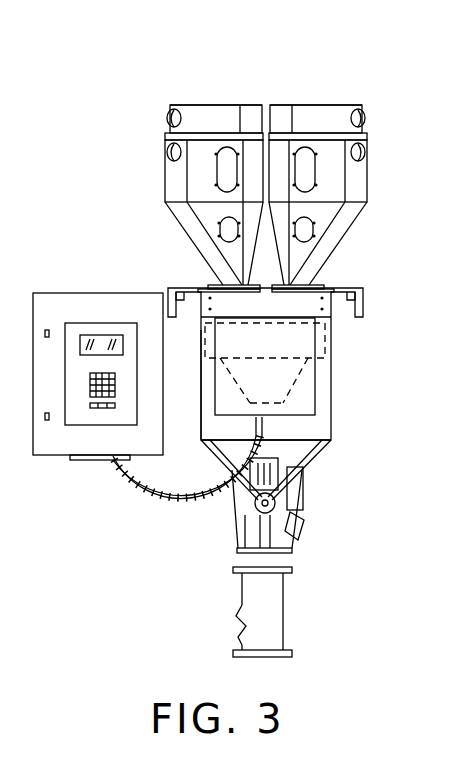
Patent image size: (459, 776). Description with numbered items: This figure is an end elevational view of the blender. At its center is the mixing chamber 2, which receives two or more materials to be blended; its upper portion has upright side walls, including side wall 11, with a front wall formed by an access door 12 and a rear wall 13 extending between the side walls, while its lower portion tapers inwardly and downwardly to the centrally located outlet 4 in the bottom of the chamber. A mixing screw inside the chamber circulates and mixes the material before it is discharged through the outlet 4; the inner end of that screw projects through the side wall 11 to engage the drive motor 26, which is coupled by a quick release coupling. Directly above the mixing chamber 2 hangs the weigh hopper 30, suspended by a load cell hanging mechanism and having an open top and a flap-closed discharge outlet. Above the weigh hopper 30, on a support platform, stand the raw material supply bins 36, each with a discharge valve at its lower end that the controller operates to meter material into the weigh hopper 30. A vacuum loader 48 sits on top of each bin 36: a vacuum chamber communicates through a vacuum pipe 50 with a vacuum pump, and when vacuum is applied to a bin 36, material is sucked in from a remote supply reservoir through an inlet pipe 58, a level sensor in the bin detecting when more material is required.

The mixing chamber 2 is at (332, 393).
The outlet 4 is at (250, 530).
The side wall 11 is at (310, 432).
The access door 12 is at (200, 415).
The rear wall 13 is at (331, 428).
The drive motor 26 is at (250, 482).
The weigh hopper 30 is at (317, 359).
The raw material supply bin 36 is at (337, 233).
The vacuum loader 48 is at (300, 104).
The vacuum pipe 50 is at (167, 117).
The inlet pipe 58 is at (167, 150).